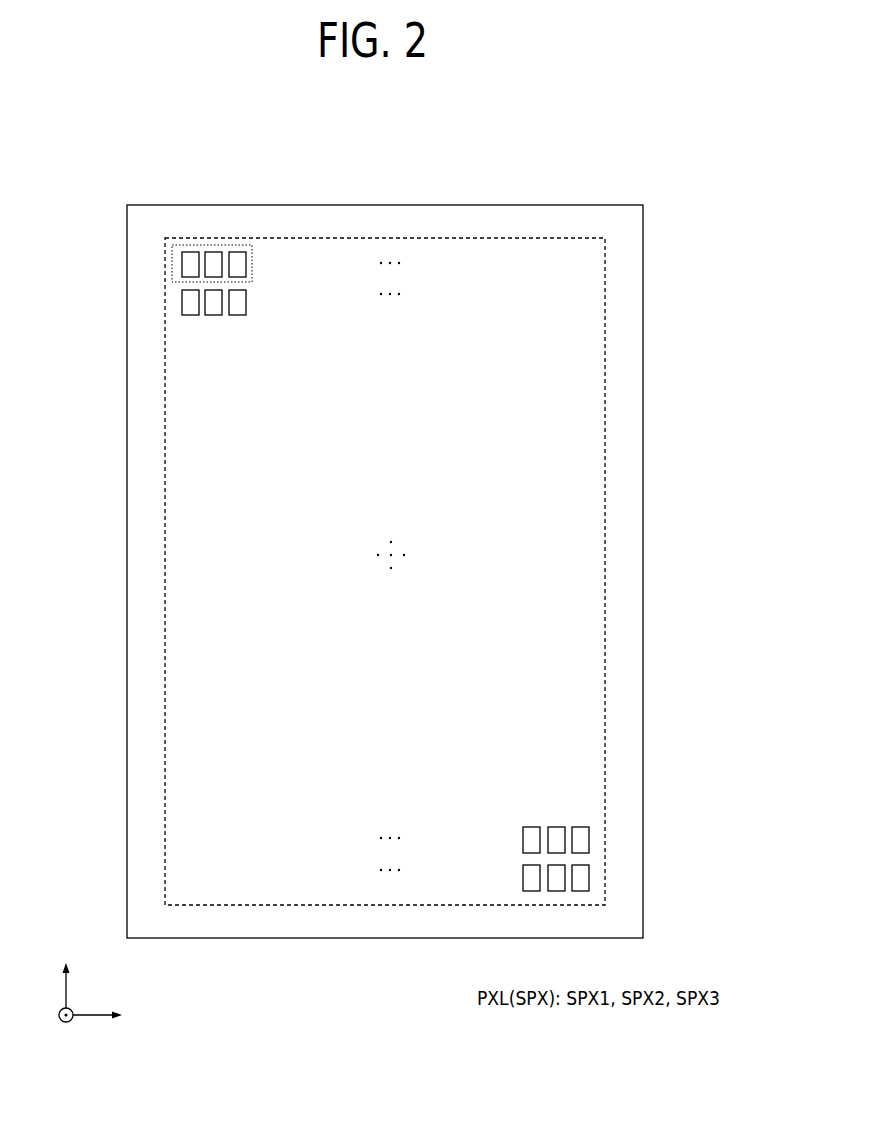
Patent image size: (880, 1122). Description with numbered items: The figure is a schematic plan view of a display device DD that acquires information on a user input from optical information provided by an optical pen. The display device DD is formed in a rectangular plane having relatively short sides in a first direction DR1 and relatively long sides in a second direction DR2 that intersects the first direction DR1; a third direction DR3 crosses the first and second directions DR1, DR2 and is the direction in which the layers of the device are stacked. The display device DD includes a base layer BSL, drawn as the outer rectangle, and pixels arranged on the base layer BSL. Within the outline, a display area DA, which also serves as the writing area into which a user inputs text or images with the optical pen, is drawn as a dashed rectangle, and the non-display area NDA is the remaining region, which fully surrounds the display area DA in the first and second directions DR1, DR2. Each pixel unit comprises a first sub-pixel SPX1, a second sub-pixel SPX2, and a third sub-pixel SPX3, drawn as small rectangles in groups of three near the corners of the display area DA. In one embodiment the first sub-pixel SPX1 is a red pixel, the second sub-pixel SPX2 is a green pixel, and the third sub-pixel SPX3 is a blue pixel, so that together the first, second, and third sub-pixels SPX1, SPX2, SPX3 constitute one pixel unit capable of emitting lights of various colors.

The display device DD is at (627, 164).
The base layer BSL is at (562, 203).
The non-display area NDA is at (490, 215).
The display area DA is at (398, 230).
The first sub-pixel SPX1 is at (192, 248).
The second sub-pixel SPX2 is at (213, 248).
The third sub-pixel SPX3 is at (235, 248).
The first direction DR1 is at (117, 1020).
The second direction DR2 is at (66, 973).
The third direction DR3 is at (65, 1033).